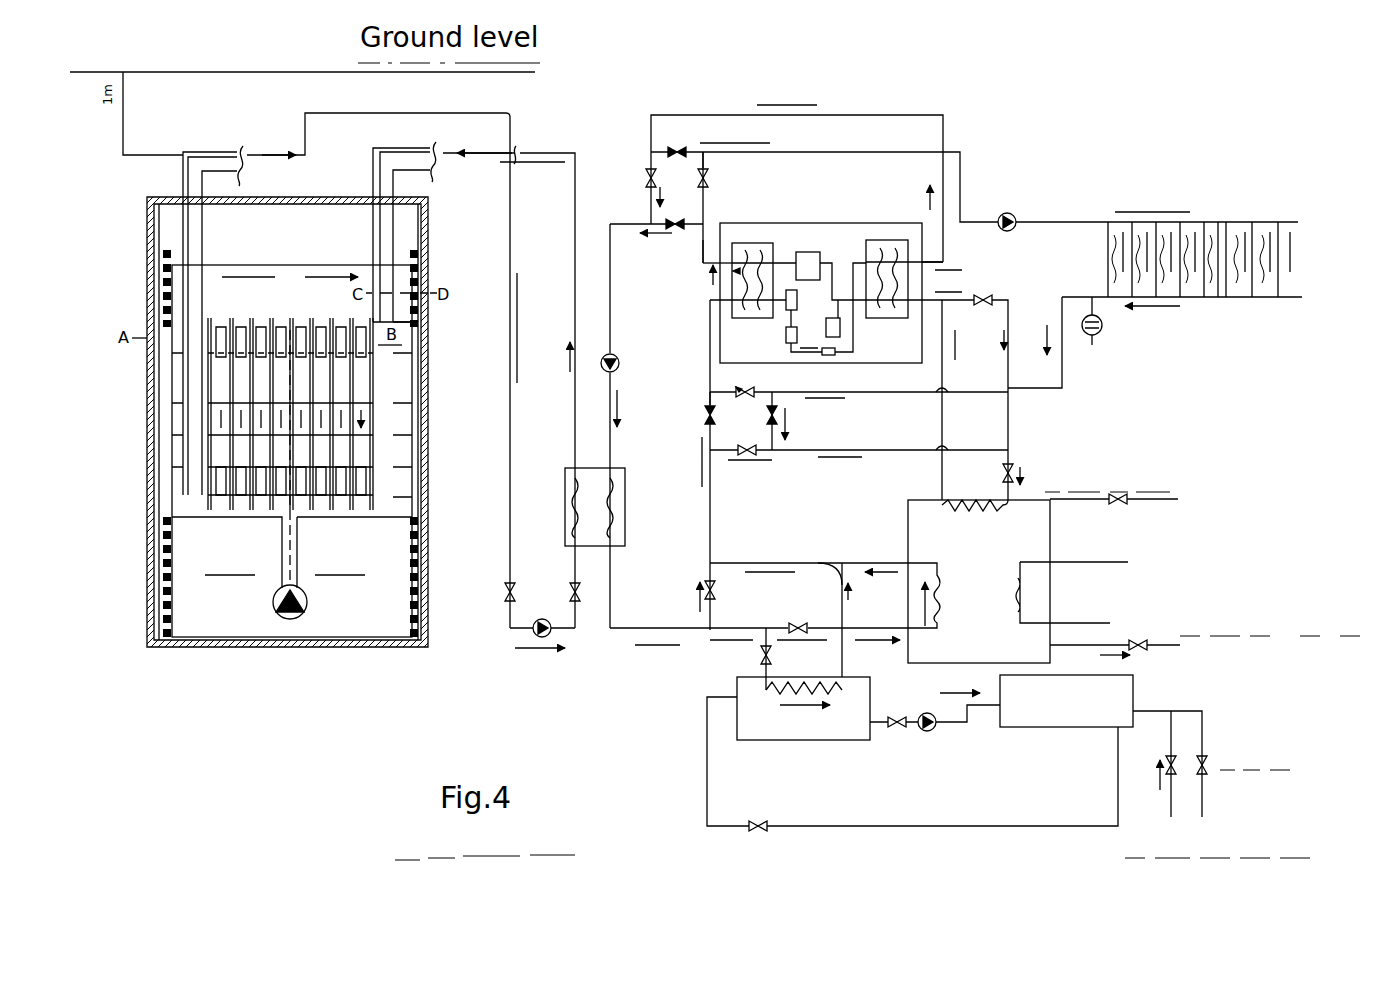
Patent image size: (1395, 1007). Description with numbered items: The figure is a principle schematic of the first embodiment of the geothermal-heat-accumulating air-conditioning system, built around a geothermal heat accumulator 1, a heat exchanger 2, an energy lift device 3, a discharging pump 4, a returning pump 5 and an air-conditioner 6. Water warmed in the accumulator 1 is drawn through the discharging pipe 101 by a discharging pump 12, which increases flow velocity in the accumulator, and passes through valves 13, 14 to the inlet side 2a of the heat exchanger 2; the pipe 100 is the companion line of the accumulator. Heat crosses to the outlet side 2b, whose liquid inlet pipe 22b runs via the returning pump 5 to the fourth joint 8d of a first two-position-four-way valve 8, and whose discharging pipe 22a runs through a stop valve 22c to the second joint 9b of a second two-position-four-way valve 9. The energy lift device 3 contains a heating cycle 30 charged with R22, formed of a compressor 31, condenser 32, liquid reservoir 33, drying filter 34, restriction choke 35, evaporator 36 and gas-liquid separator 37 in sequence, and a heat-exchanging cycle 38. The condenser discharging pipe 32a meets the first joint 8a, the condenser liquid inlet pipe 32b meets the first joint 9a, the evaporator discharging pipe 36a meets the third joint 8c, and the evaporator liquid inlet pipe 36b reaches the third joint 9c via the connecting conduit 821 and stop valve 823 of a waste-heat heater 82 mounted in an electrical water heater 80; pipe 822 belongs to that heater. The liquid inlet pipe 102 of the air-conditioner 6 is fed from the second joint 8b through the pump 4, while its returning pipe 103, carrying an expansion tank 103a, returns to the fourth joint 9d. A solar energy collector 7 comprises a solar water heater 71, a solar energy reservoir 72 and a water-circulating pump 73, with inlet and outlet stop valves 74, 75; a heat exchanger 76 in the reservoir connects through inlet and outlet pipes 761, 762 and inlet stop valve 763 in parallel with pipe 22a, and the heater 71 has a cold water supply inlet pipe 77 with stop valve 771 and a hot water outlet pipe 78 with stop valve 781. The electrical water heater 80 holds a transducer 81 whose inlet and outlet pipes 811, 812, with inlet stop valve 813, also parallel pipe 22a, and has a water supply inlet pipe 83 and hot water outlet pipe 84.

The geothermal heat accumulator 1 is at (333, 150).
The outlet pipe 100 is at (402, 160).
The discharging pipe 101 is at (212, 160).
The heat exchanger 2 is at (553, 517).
The inlet side 2a is at (566, 494).
The outlet side 2b is at (624, 494).
The returning pump 5 is at (618, 357).
The discharging pump 12 is at (534, 636).
The valve 13 is at (505, 600).
The valve 14 is at (569, 590).
The discharging pipe 22a is at (620, 594).
The liquid inlet pipe 22b is at (620, 386).
The stop valve 22c is at (715, 596).
The energy lift device 3 is at (803, 225).
The heating cycle 30 is at (857, 255).
The compressor 31 is at (812, 258).
The condenser 32 is at (765, 255).
The discharging pipe 32a is at (687, 265).
The liquid inlet pipe 32b is at (709, 323).
The liquid reservoir 33 is at (787, 306).
The drying filter 34 is at (787, 335).
The restriction choke 35 is at (832, 358).
The evaporator 36 is at (887, 250).
The discharging pipe 36a is at (945, 190).
The liquid inlet pipe 36b is at (952, 302).
The gas-liquid separator 37 is at (841, 329).
The heat-exchanging cycle 38 is at (817, 373).
The discharging pump 4 is at (1010, 212).
The air-conditioner 6 is at (1196, 215).
The liquid inlet pipe 102 is at (1072, 218).
The returning pipe 103 is at (1100, 300).
The expansion tank 103a is at (1102, 354).
The first two-position-four-way valve 8 is at (822, 184).
The first joint 8a is at (712, 222).
The second joint 8b is at (712, 154).
The third joint 8c is at (648, 150).
The fourth joint 8d is at (648, 222).
The second two-position-four-way valve 9 is at (782, 439).
The first joint 9a is at (705, 392).
The second joint 9b is at (710, 455).
The third joint 9c is at (775, 455).
The fourth joint 9d is at (765, 392).
The solar energy collector 7 is at (912, 759).
The solar water heater 71 is at (1066, 701).
The solar energy reservoir 72 is at (804, 705).
The water-circulating pump 73 is at (933, 731).
The inlet stop valve 74 is at (752, 835).
The outlet stop valve 75 is at (899, 731).
The heat exchanger 76 is at (775, 684).
The inlet pipe 761 is at (764, 671).
The outlet pipe 762 is at (822, 560).
The heat exchanger inlet stop valve 763 is at (756, 655).
The cold water supply inlet pipe 77 is at (1203, 730).
The water supply stop valve 771 is at (1208, 772).
The hot water outlet pipe 78 is at (1171, 800).
The hot water outlet stop valve 781 is at (1170, 760).
The electrical water heater 80 is at (979, 581).
The transducer 81 is at (940, 575).
The inlet pipe 811 is at (866, 628).
The outlet pipe 812 is at (867, 560).
The inlet stop valve 813 is at (797, 618).
The waste-heat heater 82 is at (1004, 513).
The connecting conduit 821 is at (1010, 405).
The pipe 822 is at (940, 428).
The stop valve 823 is at (1015, 470).
The water supply inlet pipe 83 is at (1178, 499).
The hot water outlet pipe 84 is at (1188, 649).